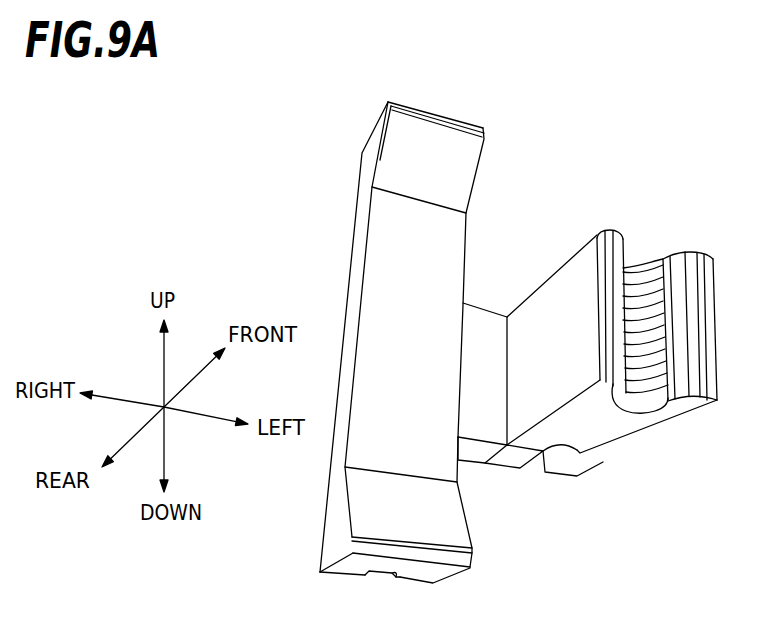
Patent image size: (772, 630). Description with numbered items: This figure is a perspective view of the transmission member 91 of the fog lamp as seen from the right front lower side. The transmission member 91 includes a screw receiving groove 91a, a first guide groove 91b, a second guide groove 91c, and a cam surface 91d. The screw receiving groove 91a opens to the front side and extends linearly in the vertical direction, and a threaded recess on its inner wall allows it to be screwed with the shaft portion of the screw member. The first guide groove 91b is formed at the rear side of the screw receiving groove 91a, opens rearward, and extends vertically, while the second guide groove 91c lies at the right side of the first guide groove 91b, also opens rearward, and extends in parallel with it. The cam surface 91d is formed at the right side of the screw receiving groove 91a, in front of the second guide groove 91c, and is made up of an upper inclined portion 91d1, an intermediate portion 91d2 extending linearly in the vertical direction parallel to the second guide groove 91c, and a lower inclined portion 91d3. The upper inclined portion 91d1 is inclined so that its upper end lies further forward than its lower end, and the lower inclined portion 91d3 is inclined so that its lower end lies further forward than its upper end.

The transmission member 91 is at (637, 199).
The screw receiving groove 91a is at (658, 404).
The first guide groove 91b is at (557, 458).
The second guide groove 91c is at (387, 573).
The cam surface 91d is at (483, 226).
The upper inclined portion 91d1 is at (395, 143).
The intermediate portion 91d2 is at (382, 243).
The lower inclined portion 91d3 is at (360, 492).